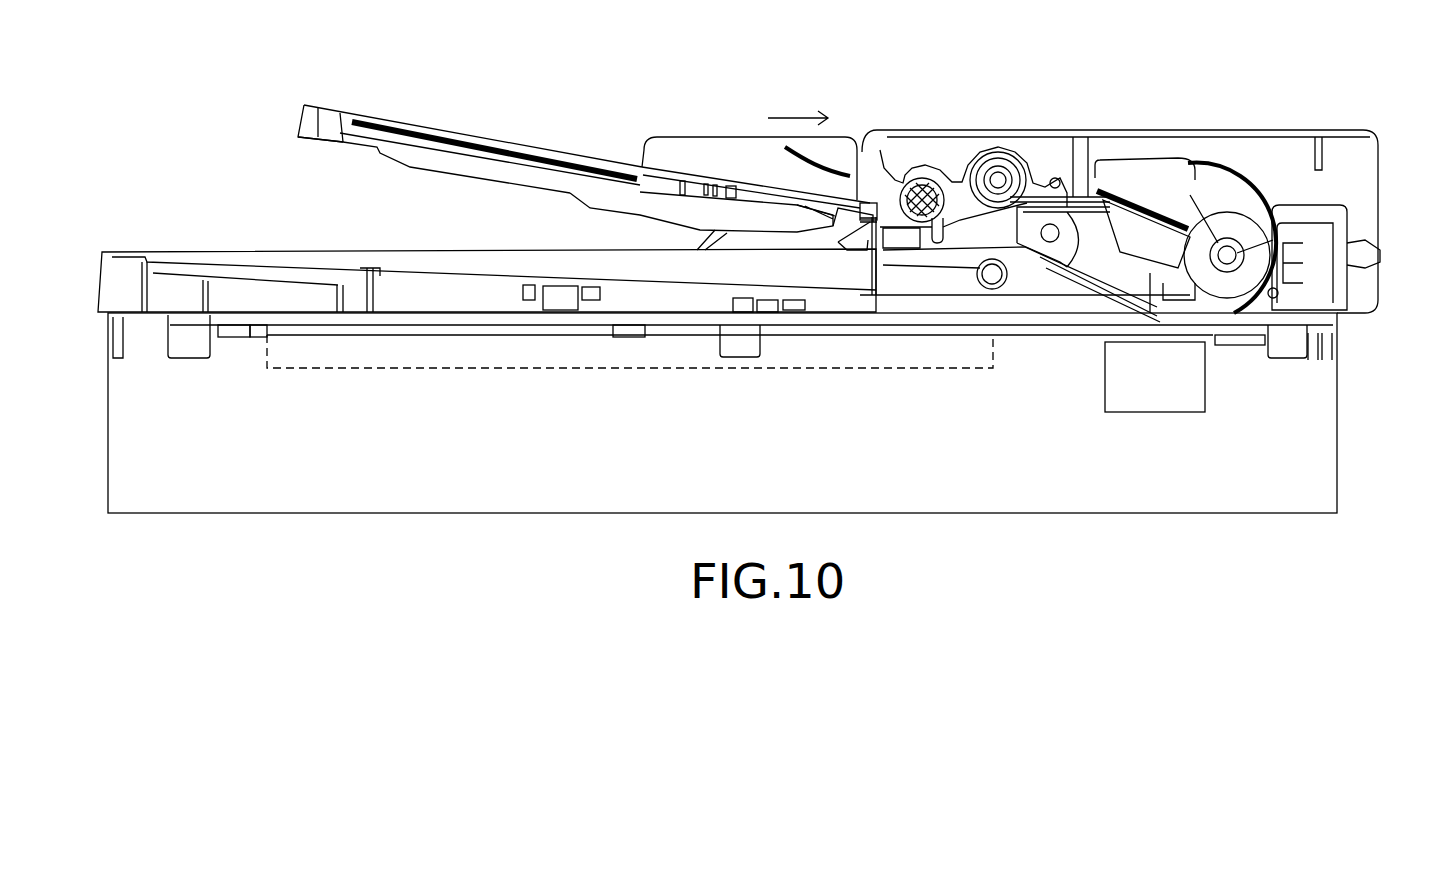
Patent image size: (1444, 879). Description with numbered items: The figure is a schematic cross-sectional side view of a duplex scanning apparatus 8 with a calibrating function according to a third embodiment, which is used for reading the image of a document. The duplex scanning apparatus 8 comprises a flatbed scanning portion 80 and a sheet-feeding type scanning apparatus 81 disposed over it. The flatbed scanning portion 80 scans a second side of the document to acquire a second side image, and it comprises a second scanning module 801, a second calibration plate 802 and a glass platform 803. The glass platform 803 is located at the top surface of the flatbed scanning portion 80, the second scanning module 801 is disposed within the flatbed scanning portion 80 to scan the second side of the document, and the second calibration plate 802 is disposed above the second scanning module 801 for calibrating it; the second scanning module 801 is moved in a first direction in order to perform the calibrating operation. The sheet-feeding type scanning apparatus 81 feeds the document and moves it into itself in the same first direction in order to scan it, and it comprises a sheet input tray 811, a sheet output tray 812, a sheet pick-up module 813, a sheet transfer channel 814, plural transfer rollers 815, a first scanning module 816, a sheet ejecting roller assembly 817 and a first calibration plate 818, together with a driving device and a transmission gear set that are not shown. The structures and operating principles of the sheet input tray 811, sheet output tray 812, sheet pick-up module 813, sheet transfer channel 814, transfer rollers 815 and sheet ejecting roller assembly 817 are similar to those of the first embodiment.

The duplex scanning apparatus 8 is at (1183, 30).
The flatbed scanning portion 80 is at (1325, 444).
The second scanning module 801 is at (1150, 400).
The second calibration plate 802 is at (1235, 343).
The glass platform 803 is at (543, 357).
The sheet-feeding type scanning apparatus 81 is at (1250, 150).
The sheet input tray 811 is at (520, 152).
The sheet output tray 812 is at (498, 252).
The sheet pick-up module 813 is at (1000, 168).
The sheet transfer channel 814 is at (1067, 215).
The transfer rollers 815 is at (1040, 185).
The first scanning module 816 is at (1100, 223).
The sheet ejecting roller assembly 817 is at (978, 278).
The first calibration plate 818 is at (1140, 177).